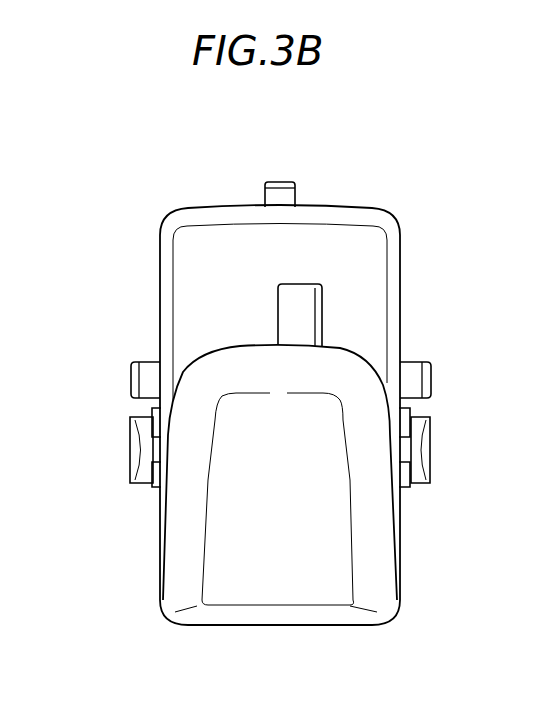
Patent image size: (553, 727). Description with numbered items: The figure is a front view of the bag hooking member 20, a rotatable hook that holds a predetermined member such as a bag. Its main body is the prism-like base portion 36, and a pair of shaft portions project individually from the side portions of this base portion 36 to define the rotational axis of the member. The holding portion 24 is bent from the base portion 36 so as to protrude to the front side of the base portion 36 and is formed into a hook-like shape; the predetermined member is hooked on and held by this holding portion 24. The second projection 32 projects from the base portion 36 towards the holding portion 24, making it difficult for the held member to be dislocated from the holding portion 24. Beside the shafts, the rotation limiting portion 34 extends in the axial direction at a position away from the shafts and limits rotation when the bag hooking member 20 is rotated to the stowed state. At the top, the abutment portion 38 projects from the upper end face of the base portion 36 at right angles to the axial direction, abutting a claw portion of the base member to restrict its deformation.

The bag hooking member 20 is at (292, 667).
The holding portion 24 is at (305, 492).
The second projection 32 is at (300, 313).
The rotation limiting portion 34 is at (412, 372).
The base portion 36 is at (200, 240).
The abutment portion 38 is at (280, 180).